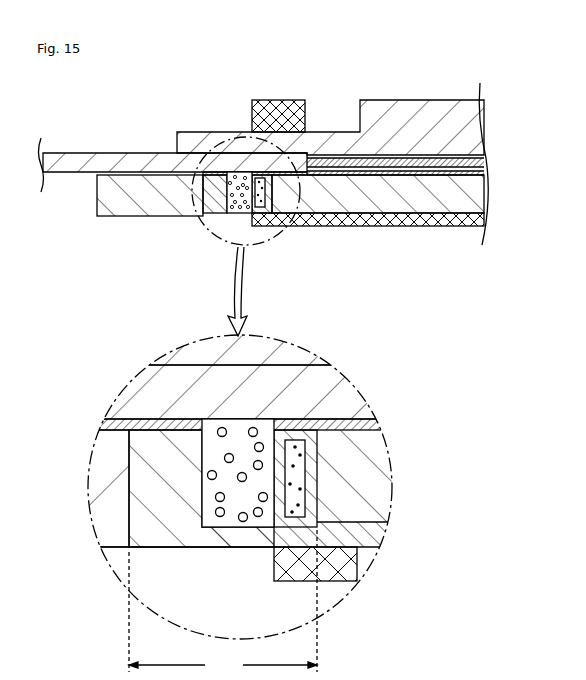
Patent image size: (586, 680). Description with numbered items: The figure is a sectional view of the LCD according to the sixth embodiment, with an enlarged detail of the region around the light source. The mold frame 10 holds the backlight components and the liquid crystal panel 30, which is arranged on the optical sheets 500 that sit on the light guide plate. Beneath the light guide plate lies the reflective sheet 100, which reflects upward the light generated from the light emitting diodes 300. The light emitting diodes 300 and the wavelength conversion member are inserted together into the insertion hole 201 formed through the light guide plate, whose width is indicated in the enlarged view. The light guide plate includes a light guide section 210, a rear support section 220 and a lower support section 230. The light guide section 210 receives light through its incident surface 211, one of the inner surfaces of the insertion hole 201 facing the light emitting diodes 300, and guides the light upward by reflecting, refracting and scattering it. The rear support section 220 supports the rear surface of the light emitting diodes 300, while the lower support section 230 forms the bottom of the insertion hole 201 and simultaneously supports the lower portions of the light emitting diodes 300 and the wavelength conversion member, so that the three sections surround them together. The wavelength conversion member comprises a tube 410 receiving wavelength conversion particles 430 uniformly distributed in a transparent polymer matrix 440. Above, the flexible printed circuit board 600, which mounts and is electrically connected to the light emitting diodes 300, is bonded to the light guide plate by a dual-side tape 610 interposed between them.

The mold frame 10 is at (125, 203).
The liquid crystal panel 30 is at (414, 102).
The reflective sheet 100 is at (316, 224).
The insertion hole 201 is at (223, 601).
The light guide section 210 is at (368, 198).
The incident surface 211 is at (312, 500).
The rear support section 220 is at (210, 210).
The lower support section 230 is at (236, 547).
The light emitting diodes 300 is at (236, 172).
The tube 410 is at (305, 523).
The wavelength conversion particles 430 is at (297, 446).
The matrix 440 is at (302, 476).
The optical sheets 500 is at (417, 168).
The flexible printed circuit board 600 is at (127, 160).
The dual-side tape 610 is at (203, 170).